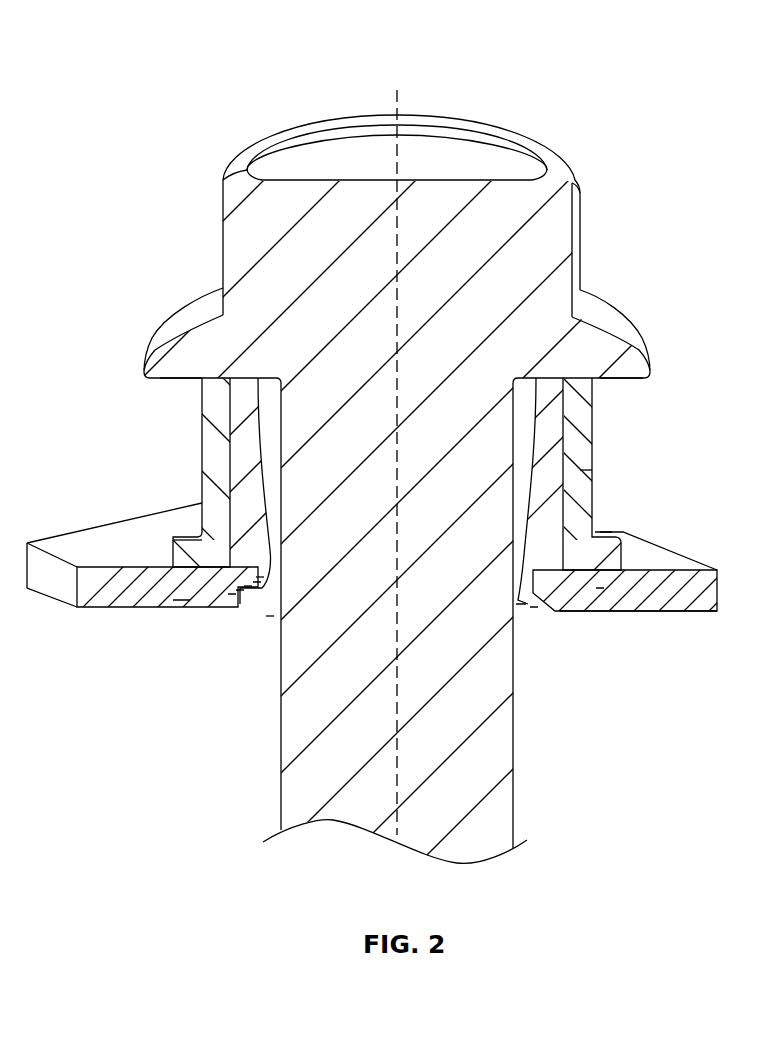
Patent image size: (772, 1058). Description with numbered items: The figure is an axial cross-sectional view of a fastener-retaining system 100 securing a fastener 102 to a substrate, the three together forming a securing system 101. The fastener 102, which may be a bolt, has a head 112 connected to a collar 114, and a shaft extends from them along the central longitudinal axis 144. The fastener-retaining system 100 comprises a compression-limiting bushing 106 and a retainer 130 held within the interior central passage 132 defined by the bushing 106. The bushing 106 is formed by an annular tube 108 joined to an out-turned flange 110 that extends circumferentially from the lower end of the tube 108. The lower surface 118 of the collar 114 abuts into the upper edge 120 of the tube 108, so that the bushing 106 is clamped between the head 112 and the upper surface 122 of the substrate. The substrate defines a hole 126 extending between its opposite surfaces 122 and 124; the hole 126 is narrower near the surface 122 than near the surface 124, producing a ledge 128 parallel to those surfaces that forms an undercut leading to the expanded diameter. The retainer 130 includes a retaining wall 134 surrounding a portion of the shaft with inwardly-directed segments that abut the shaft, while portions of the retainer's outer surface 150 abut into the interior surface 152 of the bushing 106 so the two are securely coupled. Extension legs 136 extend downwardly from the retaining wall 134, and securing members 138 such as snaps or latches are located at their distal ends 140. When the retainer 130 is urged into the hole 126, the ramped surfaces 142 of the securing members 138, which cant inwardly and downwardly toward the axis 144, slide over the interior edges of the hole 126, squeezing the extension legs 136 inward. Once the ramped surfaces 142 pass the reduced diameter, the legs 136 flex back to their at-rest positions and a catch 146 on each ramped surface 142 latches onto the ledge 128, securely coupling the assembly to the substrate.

The fastener-retaining system 100 is at (617, 490).
The securing system 101 is at (175, 100).
The fastener 102 is at (518, 777).
The compression-limiting bushing 106 is at (370, 515).
The annular tube 108 is at (611, 484).
The out-turned flange 110 is at (182, 528).
The head 112 is at (556, 160).
The collar 114 is at (612, 318).
The lower surface 118 is at (622, 380).
The upper edge 120 is at (203, 380).
The surface 122 is at (673, 565).
The surface 124 is at (680, 615).
The hole 126 is at (258, 578).
The ledge 128 is at (247, 588).
The retainer 130 is at (562, 438).
The interior central passage 132 is at (200, 537).
The retaining wall 134 is at (550, 433).
The extension legs 136 is at (175, 605).
The securing members 138 is at (270, 614).
The distal ends 140 is at (233, 595).
The ramped surfaces 142 is at (257, 583).
The central longitudinal axis 144 is at (400, 98).
The catch 146 is at (240, 593).
The outer surface 150 is at (230, 473).
The interior surface 152 is at (233, 480).